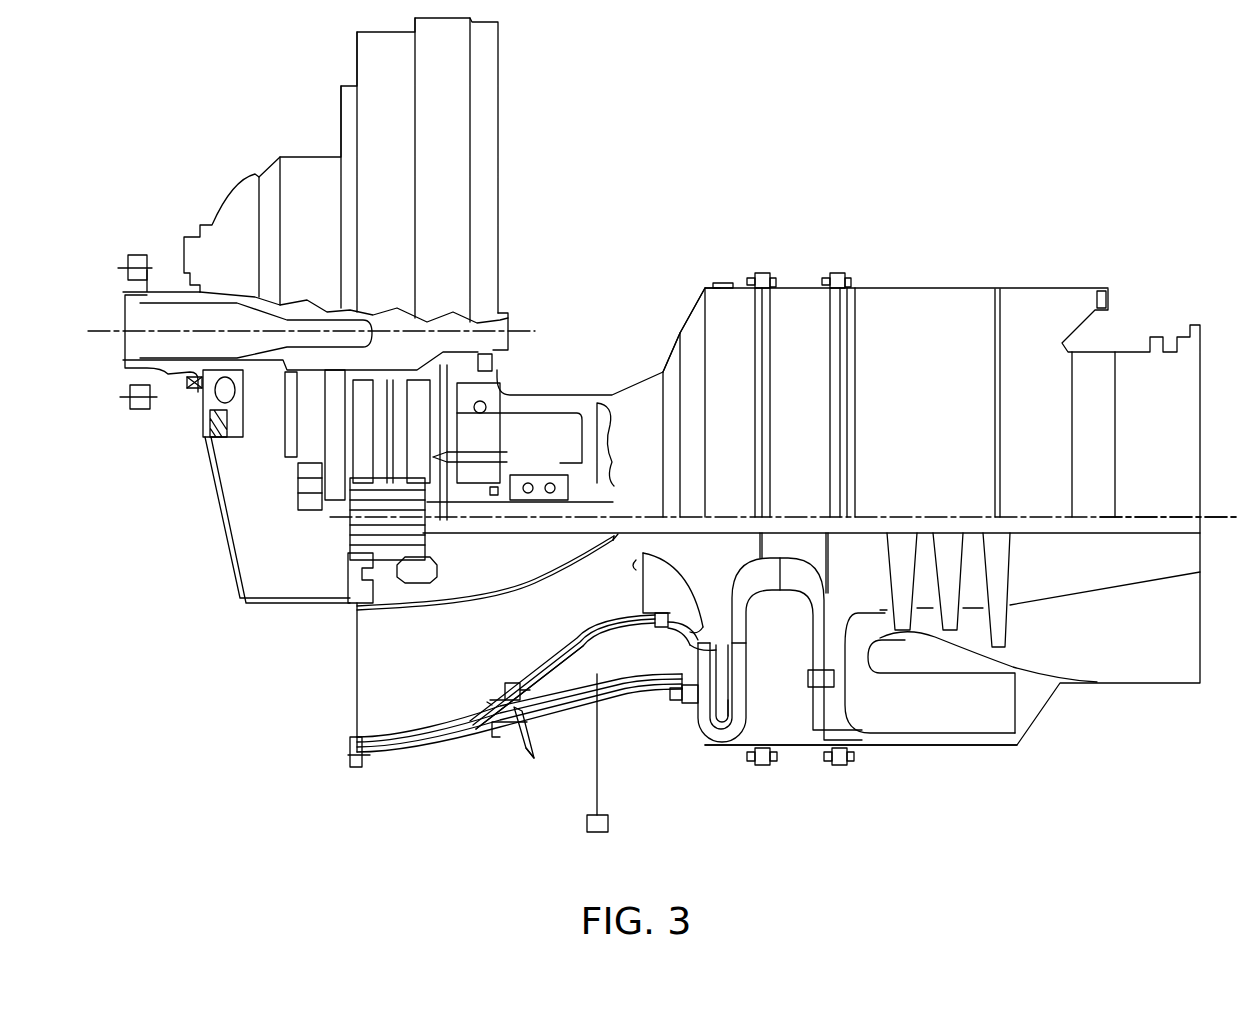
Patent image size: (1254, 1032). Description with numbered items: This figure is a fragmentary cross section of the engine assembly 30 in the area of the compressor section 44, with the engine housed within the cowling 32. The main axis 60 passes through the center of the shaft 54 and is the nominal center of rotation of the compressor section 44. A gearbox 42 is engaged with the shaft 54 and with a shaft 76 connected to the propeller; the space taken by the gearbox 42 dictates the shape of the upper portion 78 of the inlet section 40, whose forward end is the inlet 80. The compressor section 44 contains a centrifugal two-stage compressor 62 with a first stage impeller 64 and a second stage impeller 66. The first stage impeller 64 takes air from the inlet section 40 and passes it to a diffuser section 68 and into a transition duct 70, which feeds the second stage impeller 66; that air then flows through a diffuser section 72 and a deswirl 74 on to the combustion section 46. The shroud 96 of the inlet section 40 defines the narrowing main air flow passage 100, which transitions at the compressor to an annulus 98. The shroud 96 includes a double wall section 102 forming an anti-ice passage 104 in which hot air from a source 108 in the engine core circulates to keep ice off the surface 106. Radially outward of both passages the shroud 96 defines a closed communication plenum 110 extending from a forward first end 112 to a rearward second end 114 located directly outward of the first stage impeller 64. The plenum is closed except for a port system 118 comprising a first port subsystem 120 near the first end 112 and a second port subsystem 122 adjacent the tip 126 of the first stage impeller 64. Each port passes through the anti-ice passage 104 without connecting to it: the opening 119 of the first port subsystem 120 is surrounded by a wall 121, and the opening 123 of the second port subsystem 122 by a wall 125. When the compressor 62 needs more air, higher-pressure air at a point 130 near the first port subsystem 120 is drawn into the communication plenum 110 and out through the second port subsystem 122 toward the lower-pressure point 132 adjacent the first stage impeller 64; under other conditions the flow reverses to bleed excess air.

The engine assembly 30 is at (950, 283).
The cowling 32 is at (690, 297).
The inlet section 40 is at (511, 737).
The gearbox 42 is at (475, 127).
The compressor section 44 is at (735, 283).
The combustion section 46 is at (970, 710).
The shaft 54 is at (1070, 535).
The main axis 60 is at (1225, 517).
The compressor 62 is at (700, 733).
The first stage impeller 64 is at (685, 608).
The second stage impeller 66 is at (826, 590).
The diffuser section 68 is at (698, 690).
The transition duct 70 is at (738, 712).
The diffuser section 72 is at (808, 690).
The deswirl 74 is at (855, 747).
The shaft 76 is at (503, 337).
The upper portion 78 is at (500, 598).
The inlet 80 is at (357, 675).
The shroud 96 is at (380, 757).
The annulus 98 is at (626, 553).
The main air flow passage 100 is at (456, 630).
The double wall section 102 is at (443, 722).
The anti-ice passage 104 is at (603, 617).
The surface 106 is at (538, 665).
The source 108 is at (597, 832).
The communication plenum 110 is at (631, 663).
The first end 112 is at (495, 722).
The second end 114 is at (705, 622).
The port system 118 is at (503, 675).
The opening 119 is at (487, 702).
The first port subsystem 120 is at (515, 745).
The wall 121 is at (530, 700).
The second port subsystem 122 is at (637, 607).
The opening 123 is at (735, 652).
The wall 125 is at (652, 628).
The tip 126 is at (720, 640).
The point 130 is at (505, 680).
The point 132 is at (636, 560).